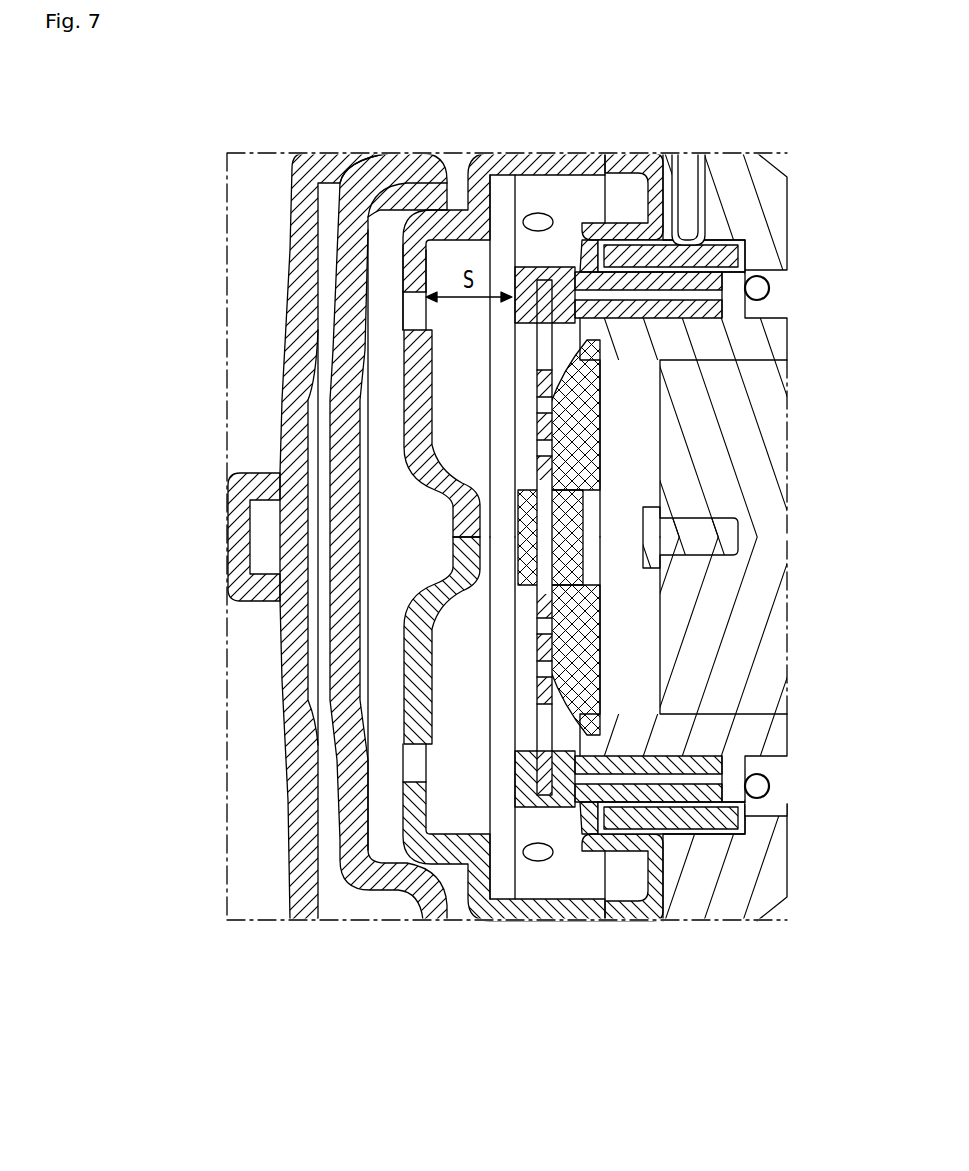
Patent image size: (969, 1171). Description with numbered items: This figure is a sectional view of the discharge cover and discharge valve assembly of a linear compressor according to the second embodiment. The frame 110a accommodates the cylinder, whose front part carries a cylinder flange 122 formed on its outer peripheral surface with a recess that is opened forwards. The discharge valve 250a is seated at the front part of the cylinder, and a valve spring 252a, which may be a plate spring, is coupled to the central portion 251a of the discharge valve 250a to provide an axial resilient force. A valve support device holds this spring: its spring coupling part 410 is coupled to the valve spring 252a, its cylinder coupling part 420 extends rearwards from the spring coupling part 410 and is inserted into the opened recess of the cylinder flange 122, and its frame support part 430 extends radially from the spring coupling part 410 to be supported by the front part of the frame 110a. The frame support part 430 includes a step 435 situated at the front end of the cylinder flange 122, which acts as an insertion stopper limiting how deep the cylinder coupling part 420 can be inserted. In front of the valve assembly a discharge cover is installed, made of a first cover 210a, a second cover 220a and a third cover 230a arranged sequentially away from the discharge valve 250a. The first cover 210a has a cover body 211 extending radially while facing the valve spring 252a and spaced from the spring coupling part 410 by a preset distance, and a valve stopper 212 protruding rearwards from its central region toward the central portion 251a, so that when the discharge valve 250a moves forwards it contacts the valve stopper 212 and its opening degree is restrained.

The frame 110a is at (727, 867).
The cylinder flange 122 is at (626, 263).
The first cover 210a is at (374, 504).
The cover body 211 is at (405, 266).
The valve stopper 212 is at (462, 534).
The second cover 220a is at (386, 209).
The third cover 230a is at (340, 184).
The discharge valve 250a is at (602, 425).
The central portion 251a is at (530, 558).
The valve spring 252a is at (543, 279).
The spring coupling part 410 is at (523, 275).
The cylinder coupling part 420 is at (703, 277).
The frame support part 430 is at (672, 195).
The step 435 is at (580, 240).